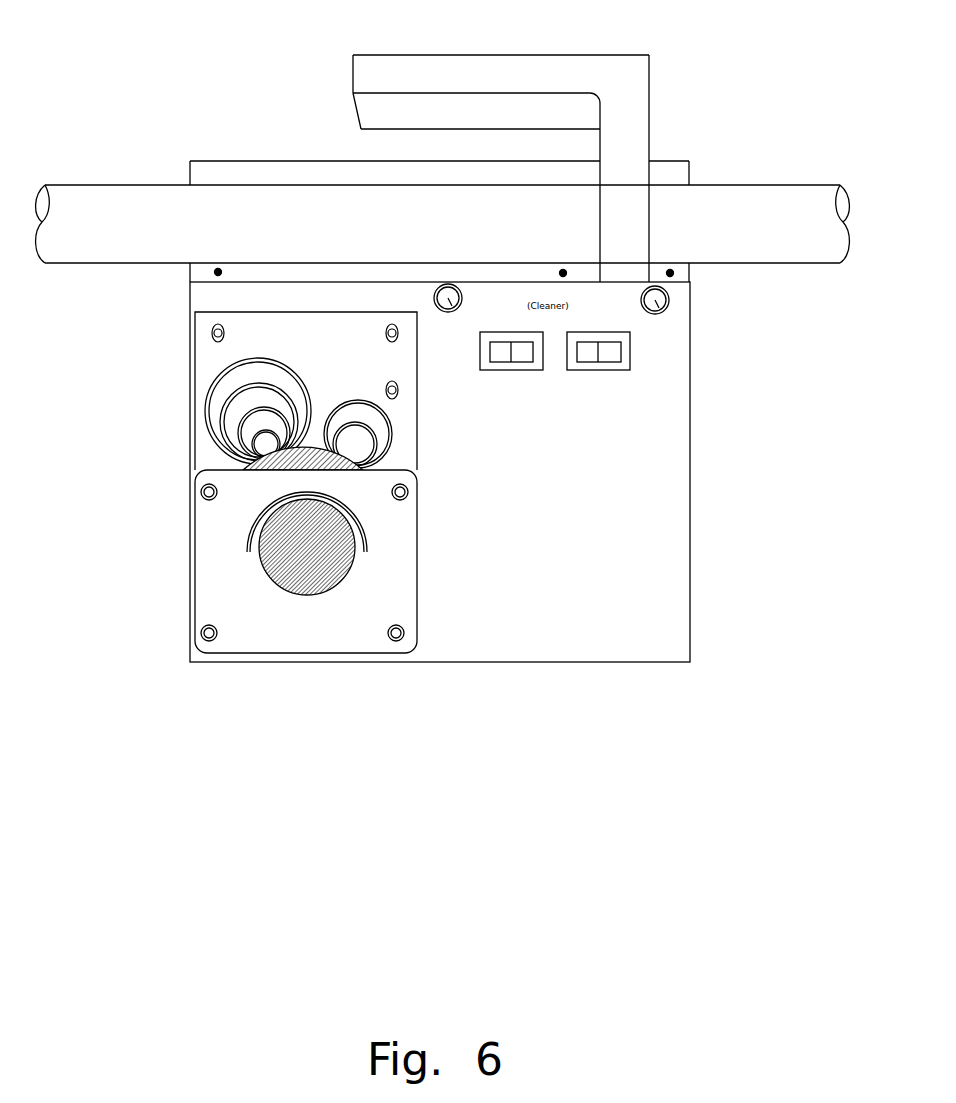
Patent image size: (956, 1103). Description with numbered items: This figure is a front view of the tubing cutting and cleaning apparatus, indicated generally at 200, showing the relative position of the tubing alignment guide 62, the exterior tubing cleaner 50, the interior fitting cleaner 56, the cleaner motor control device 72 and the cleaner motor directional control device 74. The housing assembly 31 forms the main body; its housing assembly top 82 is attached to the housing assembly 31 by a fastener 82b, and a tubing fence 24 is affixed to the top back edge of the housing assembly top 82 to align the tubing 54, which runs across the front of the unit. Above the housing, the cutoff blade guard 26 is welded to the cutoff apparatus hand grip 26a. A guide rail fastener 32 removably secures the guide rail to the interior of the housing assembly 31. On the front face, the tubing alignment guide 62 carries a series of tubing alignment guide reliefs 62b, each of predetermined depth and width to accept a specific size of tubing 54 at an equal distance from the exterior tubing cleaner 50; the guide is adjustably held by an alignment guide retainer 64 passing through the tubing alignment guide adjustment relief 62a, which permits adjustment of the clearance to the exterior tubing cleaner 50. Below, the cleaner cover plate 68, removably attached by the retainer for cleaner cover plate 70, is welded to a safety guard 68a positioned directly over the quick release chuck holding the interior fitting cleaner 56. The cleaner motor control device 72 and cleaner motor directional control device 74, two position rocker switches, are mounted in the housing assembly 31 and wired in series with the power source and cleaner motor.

The tubing fence 24 is at (290, 175).
The cutoff blade guard 26 is at (628, 138).
The cutoff apparatus hand grip 26a is at (520, 72).
The housing assembly 31 is at (667, 602).
The guide rail fastener 32 is at (449, 306).
The exterior tubing cleaner 50 is at (250, 465).
The tubing 54 is at (120, 200).
The interior fitting cleaner 56 is at (277, 587).
The tubing alignment guide 62 is at (208, 363).
The tubing alignment guide adjustment relief 62a is at (225, 323).
The tubing alignment guide relief 62b is at (212, 383).
The alignment guide retainer 64 is at (381, 338).
The cleaner cover plate 68 is at (323, 637).
The safety guard 68a is at (353, 517).
The retainer for cleaner cover plate 70 is at (205, 497).
The cleaner motor control device 72 is at (510, 363).
The cleaner motor directional control device 74 is at (604, 363).
The housing assembly top 82 is at (202, 274).
The fastener for housing assembly top 82b is at (220, 271).
The cleaner 200 is at (440, 482).